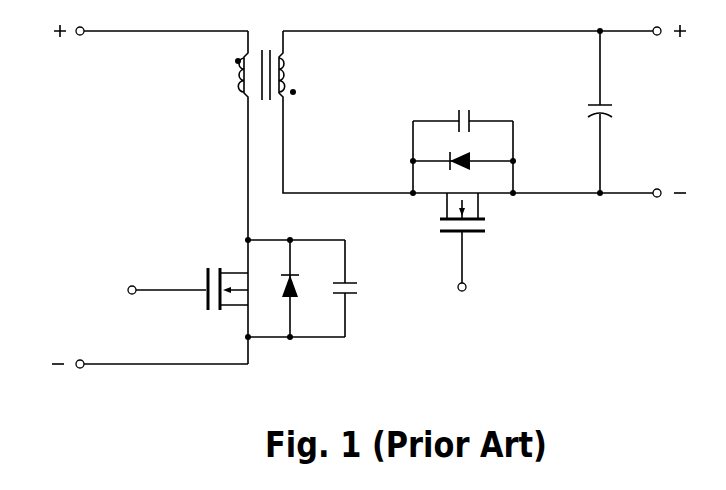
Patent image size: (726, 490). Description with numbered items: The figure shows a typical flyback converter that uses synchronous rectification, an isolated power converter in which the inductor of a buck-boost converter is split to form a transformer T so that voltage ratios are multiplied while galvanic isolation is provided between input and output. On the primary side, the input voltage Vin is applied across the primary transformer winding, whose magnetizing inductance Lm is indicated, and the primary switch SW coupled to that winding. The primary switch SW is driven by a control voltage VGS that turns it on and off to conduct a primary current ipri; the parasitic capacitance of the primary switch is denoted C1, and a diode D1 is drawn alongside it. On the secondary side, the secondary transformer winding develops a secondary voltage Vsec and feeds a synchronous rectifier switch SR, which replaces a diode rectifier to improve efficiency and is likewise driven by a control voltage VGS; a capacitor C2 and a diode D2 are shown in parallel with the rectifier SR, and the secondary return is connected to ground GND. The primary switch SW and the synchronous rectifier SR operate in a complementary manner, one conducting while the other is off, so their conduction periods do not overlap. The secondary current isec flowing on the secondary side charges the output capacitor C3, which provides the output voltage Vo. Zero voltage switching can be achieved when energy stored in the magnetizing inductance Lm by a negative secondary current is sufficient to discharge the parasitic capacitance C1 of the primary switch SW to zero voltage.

The input voltage Vin is at (36, 186).
The transformer T is at (265, 117).
The magnetizing inductance Lm is at (240, 80).
The primary current ipri is at (188, 46).
The secondary current isec is at (292, 46).
The secondary voltage Vsec is at (300, 114).
The output voltage Vo is at (669, 74).
The ground GND is at (664, 209).
The output capacitor C3 is at (582, 112).
The capacitor C2 is at (463, 138).
The diode D2 is at (463, 151).
The synchronous rectifier switch SR is at (482, 207).
The control voltage VGS is at (277, 302).
The primary switch SW is at (238, 268).
The diode D1 is at (295, 288).
The primary switch parasitic capacitance C1 is at (362, 288).